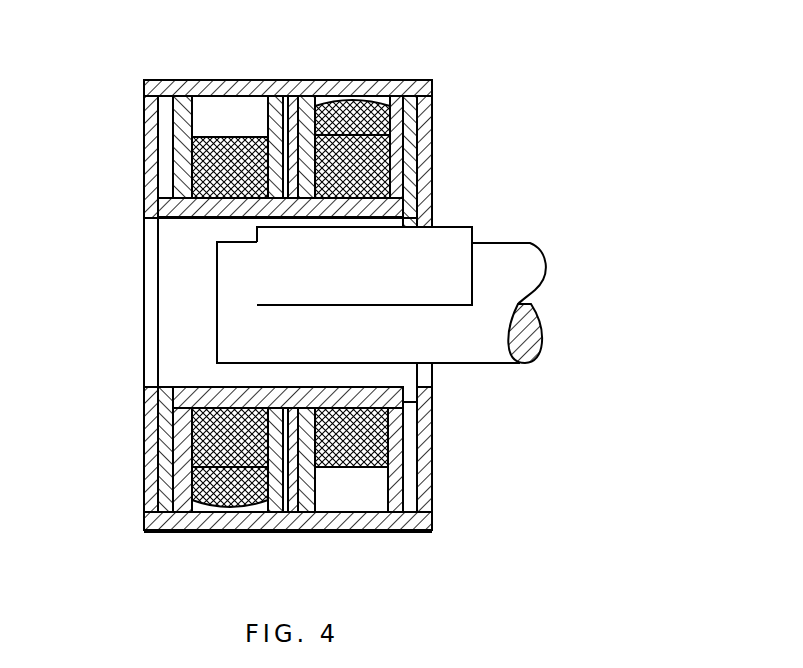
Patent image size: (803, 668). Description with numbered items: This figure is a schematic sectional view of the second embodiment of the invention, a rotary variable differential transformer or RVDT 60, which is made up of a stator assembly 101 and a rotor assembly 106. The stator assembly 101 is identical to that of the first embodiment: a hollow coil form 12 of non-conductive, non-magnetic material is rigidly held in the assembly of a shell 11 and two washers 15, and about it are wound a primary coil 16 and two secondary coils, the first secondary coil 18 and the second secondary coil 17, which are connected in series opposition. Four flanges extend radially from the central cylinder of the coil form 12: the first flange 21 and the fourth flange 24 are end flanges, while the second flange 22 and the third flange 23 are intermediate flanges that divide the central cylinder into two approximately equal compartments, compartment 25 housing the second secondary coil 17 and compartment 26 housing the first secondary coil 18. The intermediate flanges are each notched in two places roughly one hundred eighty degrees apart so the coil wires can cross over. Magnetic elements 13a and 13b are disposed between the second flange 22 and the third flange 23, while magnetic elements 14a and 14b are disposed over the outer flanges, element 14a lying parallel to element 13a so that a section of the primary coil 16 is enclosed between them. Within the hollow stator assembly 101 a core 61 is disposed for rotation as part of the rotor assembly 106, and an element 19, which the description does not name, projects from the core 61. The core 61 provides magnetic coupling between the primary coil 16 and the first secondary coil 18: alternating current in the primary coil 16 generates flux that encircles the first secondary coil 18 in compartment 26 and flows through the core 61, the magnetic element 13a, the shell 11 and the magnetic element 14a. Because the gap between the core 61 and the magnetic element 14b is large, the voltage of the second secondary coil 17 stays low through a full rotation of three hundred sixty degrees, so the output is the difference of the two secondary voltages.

The shell 11 is at (433, 88).
The coil form 12 is at (405, 428).
The magnetic element 13a is at (288, 80).
The magnetic element 13b is at (287, 508).
The magnetic element 14a is at (390, 105).
The magnetic element 14b is at (162, 502).
The washer 15 is at (433, 133).
The primary coil 16 is at (347, 98).
The second secondary coil 17 is at (165, 442).
The first secondary coil 18 is at (425, 180).
The shaft 19 is at (523, 270).
The first flange 21 is at (402, 532).
The second flange 22 is at (300, 507).
The third flange 23 is at (272, 88).
The fourth flange 24 is at (175, 87).
The compartment 25 is at (213, 108).
The compartment 26 is at (352, 495).
The RVDT 60 is at (455, 215).
The core 61 is at (457, 247).
The stator assembly 101 is at (137, 203).
The rotor assembly 106 is at (203, 320).